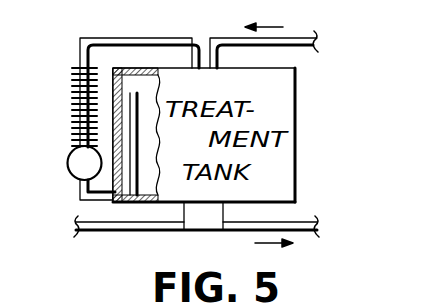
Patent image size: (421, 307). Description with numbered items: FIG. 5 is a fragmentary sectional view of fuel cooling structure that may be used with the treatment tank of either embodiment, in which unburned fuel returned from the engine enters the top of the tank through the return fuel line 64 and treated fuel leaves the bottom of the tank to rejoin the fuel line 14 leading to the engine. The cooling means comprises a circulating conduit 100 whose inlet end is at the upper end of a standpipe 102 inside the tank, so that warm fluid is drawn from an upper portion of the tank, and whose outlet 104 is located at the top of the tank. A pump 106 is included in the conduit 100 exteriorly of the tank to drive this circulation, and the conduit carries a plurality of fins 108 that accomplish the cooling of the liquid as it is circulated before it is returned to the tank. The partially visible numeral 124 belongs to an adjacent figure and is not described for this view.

The circulating conduit 100 is at (138, 30).
The standpipe 102 is at (140, 98).
The outlet 104 is at (202, 45).
The return fuel line 64 is at (305, 38).
The fins 108 is at (80, 100).
The pump 106 is at (72, 176).
The fuel line 14 is at (124, 231).
The conduit 124 is at (389, 0).